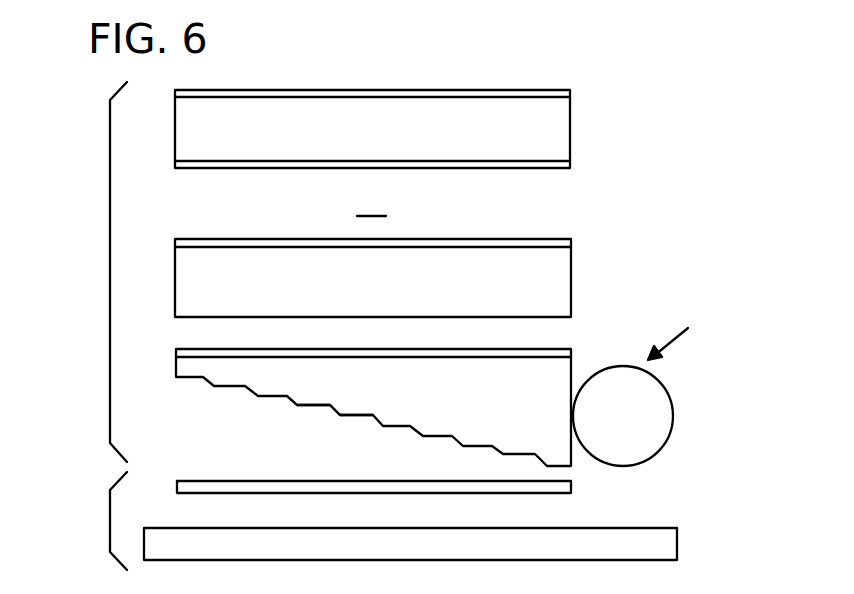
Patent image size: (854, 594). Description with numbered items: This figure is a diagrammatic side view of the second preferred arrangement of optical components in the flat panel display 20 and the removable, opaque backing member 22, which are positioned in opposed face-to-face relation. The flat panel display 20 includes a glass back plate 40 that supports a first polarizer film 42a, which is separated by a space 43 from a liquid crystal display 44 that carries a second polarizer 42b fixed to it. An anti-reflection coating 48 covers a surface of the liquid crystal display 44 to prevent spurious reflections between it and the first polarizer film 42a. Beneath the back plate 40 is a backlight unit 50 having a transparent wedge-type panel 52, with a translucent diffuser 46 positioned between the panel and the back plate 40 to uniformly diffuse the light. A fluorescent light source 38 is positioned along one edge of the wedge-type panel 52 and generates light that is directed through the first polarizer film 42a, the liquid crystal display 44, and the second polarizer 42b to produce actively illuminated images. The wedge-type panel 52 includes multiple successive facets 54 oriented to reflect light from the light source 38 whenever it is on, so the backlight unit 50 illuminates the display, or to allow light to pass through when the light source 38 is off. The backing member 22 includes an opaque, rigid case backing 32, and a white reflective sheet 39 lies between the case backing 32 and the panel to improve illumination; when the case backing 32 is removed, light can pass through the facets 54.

The flat panel display 20 is at (110, 268).
The backing member 22 is at (110, 528).
The case backing 32 is at (679, 548).
The fluorescent light source 38 is at (668, 390).
The white reflective coating or sheet 39 is at (198, 479).
The glass back plate 40 is at (573, 290).
The first polarizer film 42a is at (571, 239).
The second polarizer 42b is at (570, 90).
The space 43 is at (371, 202).
The liquid crystal display 44 is at (572, 137).
The translucent diffuser 46 is at (547, 350).
The anti-reflection coating 48 is at (560, 170).
The backlight unit 50 is at (686, 335).
The wedge-type panel 52 is at (417, 378).
The facets 54 is at (373, 420).